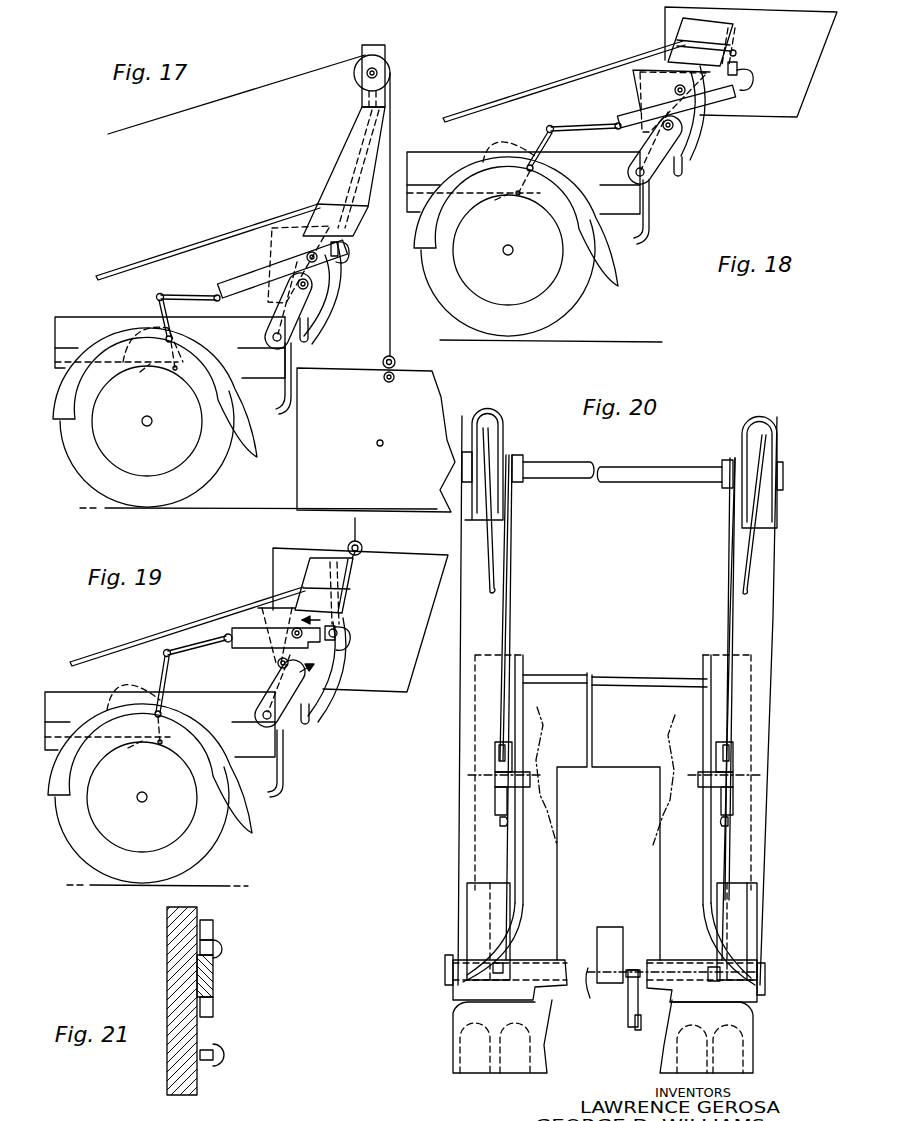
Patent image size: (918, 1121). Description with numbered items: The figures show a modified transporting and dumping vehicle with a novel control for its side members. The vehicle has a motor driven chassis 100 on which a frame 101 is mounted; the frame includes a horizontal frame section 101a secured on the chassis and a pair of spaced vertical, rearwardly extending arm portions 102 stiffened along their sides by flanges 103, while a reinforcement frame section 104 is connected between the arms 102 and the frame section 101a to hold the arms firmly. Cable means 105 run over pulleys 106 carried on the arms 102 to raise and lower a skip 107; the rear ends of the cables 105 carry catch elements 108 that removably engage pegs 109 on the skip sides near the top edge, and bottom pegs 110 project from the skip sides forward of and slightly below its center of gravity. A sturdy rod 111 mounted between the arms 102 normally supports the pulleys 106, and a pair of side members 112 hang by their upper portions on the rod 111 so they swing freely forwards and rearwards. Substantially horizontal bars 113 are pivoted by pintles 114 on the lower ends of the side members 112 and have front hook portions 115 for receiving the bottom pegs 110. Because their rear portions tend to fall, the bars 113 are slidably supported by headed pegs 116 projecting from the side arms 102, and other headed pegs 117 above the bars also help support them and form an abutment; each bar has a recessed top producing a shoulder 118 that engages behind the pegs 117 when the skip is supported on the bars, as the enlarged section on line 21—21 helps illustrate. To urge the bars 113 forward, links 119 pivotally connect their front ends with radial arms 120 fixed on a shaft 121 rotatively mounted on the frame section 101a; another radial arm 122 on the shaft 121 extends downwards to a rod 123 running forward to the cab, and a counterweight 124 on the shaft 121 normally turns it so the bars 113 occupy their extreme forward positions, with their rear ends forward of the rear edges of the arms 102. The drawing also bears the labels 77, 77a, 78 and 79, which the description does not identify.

In FIG. 19, the section line 21 is at (315, 644).
In FIG. 17, the curved arm 77 is at (322, 313).
In FIG. 18, the curved arm 77 is at (690, 154).
In FIG. 19, the curved arm 77 is at (318, 706).
In FIG. 20, the curved arm 77 is at (708, 656).
In FIG. 20, the hook end of arm 77a is at (511, 927).
In FIG. 17, the plate 78 is at (310, 336).
In FIG. 18, the plate 78 is at (682, 171).
In FIG. 19, the plate 78 is at (310, 721).
In FIG. 20, the plate 78 is at (477, 894).
In FIG. 20, the bracket 79 is at (495, 746).
In FIG. 17, the motor driven chassis 100 is at (270, 379).
In FIG. 18, the motor driven chassis 100 is at (630, 214).
In FIG. 19, the motor driven chassis 100 is at (262, 758).
In FIG. 17, the frame 101 is at (232, 332).
In FIG. 18, the frame 101 is at (655, 172).
In FIG. 19, the frame 101 is at (280, 703).
In FIG. 17, the horizontal frame section 101a is at (72, 323).
In FIG. 18, the horizontal frame section 101a is at (421, 160).
In FIG. 19, the horizontal frame section 101a is at (63, 700).
In FIG. 20, the horizontal frame section 101a is at (507, 991).
In FIG. 17, the arm portions 102 is at (342, 144).
In FIG. 18, the arm portions 102 is at (683, 29).
In FIG. 19, the arm portions 102 is at (312, 572).
In FIG. 20, the arm portions 102 is at (487, 617).
In FIG. 21, the arm portions 102 is at (175, 951).
In FIG. 17, the flanges 103 is at (333, 155).
In FIG. 17, the reinforcement frame section 104 is at (213, 240).
In FIG. 18, the reinforcement frame section 104 is at (583, 72).
In FIG. 19, the reinforcement frame section 104 is at (192, 623).
In FIG. 20, the reinforcement frame section 104 is at (621, 683).
In FIG. 17, the cable means 105 is at (265, 87).
In FIG. 19, the cable means 105 is at (357, 530).
In FIG. 20, the cable means 105 is at (493, 581).
In FIG. 17, the pulleys 106 is at (392, 72).
In FIG. 20, the pulleys 106 is at (500, 440).
In FIG. 17, the skip 107 is at (432, 405).
In FIG. 18, the skip 107 is at (810, 98).
In FIG. 19, the skip 107 is at (418, 657).
In FIG. 20, the skip 107 is at (548, 725).
In FIG. 17, the catch elements 108 is at (396, 362).
In FIG. 19, the catch elements 108 is at (363, 550).
In FIG. 17, the pegs 109 is at (394, 380).
In FIG. 17, the bottom pegs 110 is at (383, 442).
In FIG. 18, the bottom pegs 110 is at (737, 52).
In FIG. 19, the bottom pegs 110 is at (340, 636).
In FIG. 20, the bottom pegs 110 is at (468, 776).
In FIG. 17, the rod 111 is at (366, 74).
In FIG. 20, the rod 111 is at (653, 468).
In FIG. 17, the side members 112 is at (340, 121).
In FIG. 18, the side members 112 is at (738, 22).
In FIG. 19, the side members 112 is at (330, 560).
In FIG. 20, the side members 112 is at (511, 554).
In FIG. 17, the horizontal bars 113 is at (250, 282).
In FIG. 18, the horizontal bars 113 is at (736, 95).
In FIG. 19, the horizontal bars 113 is at (240, 650).
In FIG. 20, the horizontal bars 113 is at (495, 795).
In FIG. 21, the horizontal bars 113 is at (213, 984).
In FIG. 17, the pintles 114 is at (342, 262).
In FIG. 18, the pintles 114 is at (739, 69).
In FIG. 19, the pintles 114 is at (337, 646).
In FIG. 17, the hook portions 115 is at (350, 251).
In FIG. 18, the hook portions 115 is at (752, 81).
In FIG. 19, the hook portions 115 is at (351, 631).
In FIG. 17, the pegs 116 is at (310, 286).
In FIG. 18, the pegs 116 is at (676, 127).
In FIG. 19, the pegs 116 is at (277, 665).
In FIG. 20, the pegs 116 is at (508, 822).
In FIG. 21, the pegs 116 is at (224, 1053).
In FIG. 17, the pegs 117 is at (313, 251).
In FIG. 18, the pegs 117 is at (675, 89).
In FIG. 19, the pegs 117 is at (292, 629).
In FIG. 21, the pegs 117 is at (222, 949).
In FIG. 17, the shoulder 118 is at (299, 264).
In FIG. 18, the shoulder 118 is at (674, 88).
In FIG. 19, the shoulder 118 is at (262, 623).
In FIG. 20, the shoulder 118 is at (510, 758).
In FIG. 21, the shoulder 118 is at (207, 929).
In FIG. 17, the links 119 is at (200, 294).
In FIG. 18, the links 119 is at (590, 123).
In FIG. 19, the links 119 is at (200, 648).
In FIG. 17, the radial arms 120 is at (167, 307).
In FIG. 18, the radial arms 120 is at (546, 128).
In FIG. 19, the radial arms 120 is at (163, 661).
In FIG. 20, the radial arms 120 is at (505, 961).
In FIG. 17, the shaft 121 is at (173, 338).
In FIG. 18, the shaft 121 is at (547, 169).
In FIG. 19, the shaft 121 is at (162, 715).
In FIG. 20, the shaft 121 is at (580, 991).
In FIG. 17, the radial arm 122 is at (177, 356).
In FIG. 18, the radial arm 122 is at (520, 198).
In FIG. 19, the radial arm 122 is at (160, 745).
In FIG. 20, the radial arm 122 is at (627, 1008).
In FIG. 17, the rod 123 is at (146, 367).
In FIG. 18, the rod 123 is at (492, 198).
In FIG. 19, the rod 123 is at (126, 746).
In FIG. 20, the rod 123 is at (634, 1032).
In FIG. 17, the counterweight 124 is at (141, 318).
In FIG. 18, the counterweight 124 is at (495, 146).
In FIG. 19, the counterweight 124 is at (125, 688).
In FIG. 20, the counterweight 124 is at (608, 930).